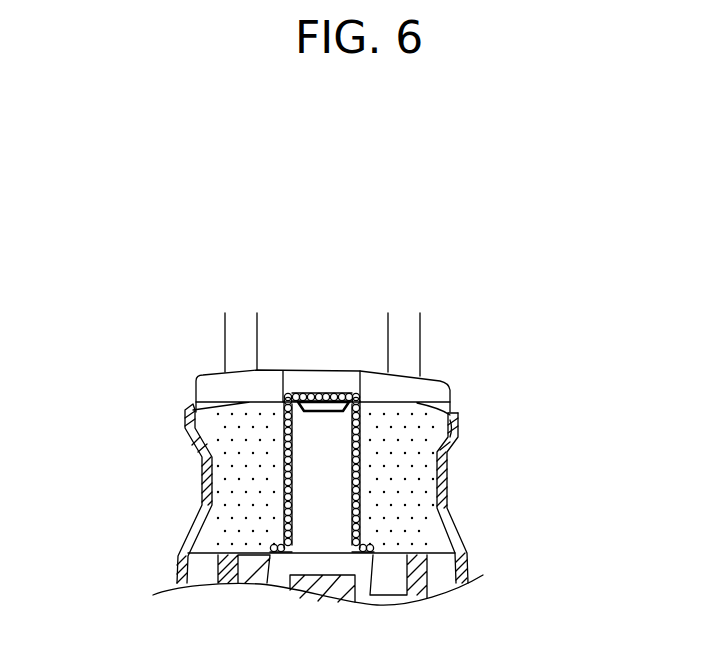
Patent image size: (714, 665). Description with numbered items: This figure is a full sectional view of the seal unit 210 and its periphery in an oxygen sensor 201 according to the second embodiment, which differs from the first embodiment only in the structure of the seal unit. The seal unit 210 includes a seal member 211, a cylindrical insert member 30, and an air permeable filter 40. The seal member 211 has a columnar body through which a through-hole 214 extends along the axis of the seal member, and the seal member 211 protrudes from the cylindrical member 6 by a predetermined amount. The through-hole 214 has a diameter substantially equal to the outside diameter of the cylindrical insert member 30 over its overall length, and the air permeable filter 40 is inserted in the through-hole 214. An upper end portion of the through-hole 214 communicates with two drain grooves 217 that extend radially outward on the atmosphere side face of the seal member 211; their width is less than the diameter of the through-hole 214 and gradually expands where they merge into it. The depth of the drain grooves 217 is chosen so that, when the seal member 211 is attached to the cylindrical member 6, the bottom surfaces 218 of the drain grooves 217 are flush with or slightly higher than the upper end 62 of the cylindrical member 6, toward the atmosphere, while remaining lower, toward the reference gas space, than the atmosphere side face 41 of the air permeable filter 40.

The oxygen sensor 201 is at (593, 193).
The seal member 211 is at (197, 380).
The drain grooves 217 is at (215, 387).
The through-hole 214 is at (290, 377).
The bottom surfaces of the drain grooves 218 is at (230, 403).
The seal unit 210 is at (454, 364).
The atmosphere side face of the air permeable filter 41 is at (338, 393).
The air permeable filter 40 is at (275, 462).
The cylindrical insert member 30 is at (272, 518).
The cylindrical member 6 is at (443, 490).
The upper end of the cylindrical member 62 is at (457, 417).